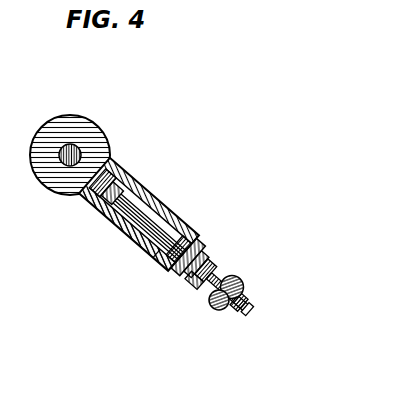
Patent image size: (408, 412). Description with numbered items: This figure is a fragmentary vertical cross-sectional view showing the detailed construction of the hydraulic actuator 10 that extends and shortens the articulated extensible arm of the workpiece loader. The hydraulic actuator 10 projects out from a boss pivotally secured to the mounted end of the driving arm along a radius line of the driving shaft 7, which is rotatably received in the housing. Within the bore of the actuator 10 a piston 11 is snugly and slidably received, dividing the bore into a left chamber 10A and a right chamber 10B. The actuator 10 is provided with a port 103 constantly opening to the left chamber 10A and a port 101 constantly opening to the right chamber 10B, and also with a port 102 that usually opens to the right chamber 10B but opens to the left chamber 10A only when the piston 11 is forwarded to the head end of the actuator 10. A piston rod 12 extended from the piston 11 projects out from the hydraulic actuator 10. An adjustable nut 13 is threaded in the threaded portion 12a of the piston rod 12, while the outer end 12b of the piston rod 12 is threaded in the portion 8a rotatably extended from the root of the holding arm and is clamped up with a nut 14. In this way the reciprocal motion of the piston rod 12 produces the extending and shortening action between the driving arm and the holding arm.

The driving shaft 7 is at (76, 146).
The portion rotatably extended from the root of the holding arm 8a is at (239, 279).
The hydraulic actuator 10 is at (167, 202).
The left chamber 10A is at (108, 186).
The right chamber 10B is at (192, 230).
The piston 11 is at (107, 207).
The piston rod 12 is at (137, 203).
The threaded portion 12a is at (191, 283).
The outer end 12b is at (224, 311).
The adjustable nut 13 is at (205, 250).
The nut 14 is at (245, 295).
The port 101 is at (163, 276).
The port 102 is at (142, 260).
The port 103 is at (91, 200).